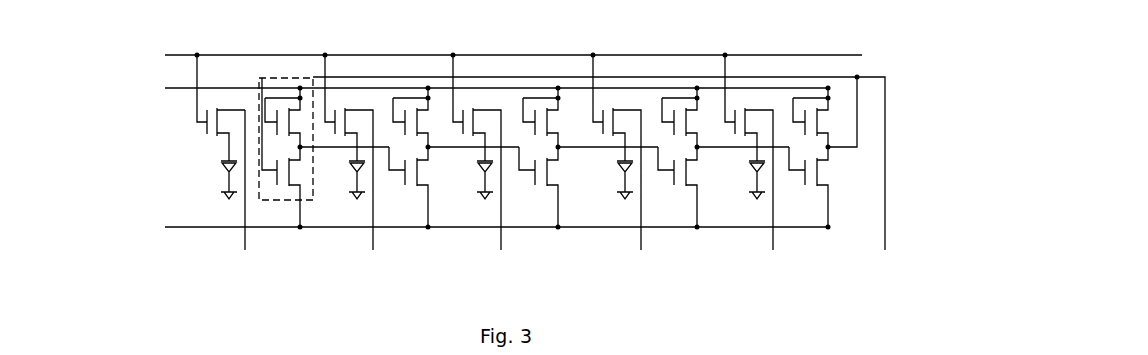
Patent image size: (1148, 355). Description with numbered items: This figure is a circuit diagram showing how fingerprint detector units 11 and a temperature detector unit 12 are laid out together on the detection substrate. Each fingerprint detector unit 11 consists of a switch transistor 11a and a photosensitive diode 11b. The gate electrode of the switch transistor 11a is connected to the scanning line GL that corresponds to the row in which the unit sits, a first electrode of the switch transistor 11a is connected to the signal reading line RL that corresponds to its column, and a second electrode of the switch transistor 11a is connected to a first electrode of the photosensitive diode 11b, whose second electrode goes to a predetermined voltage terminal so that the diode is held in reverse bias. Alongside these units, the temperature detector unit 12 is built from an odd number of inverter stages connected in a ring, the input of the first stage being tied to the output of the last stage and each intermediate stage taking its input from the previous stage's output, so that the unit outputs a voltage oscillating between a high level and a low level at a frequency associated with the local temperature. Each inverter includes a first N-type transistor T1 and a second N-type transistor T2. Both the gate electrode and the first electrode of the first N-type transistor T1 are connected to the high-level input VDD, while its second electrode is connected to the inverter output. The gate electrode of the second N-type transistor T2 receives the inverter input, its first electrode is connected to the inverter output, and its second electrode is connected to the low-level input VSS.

The fingerprint detector unit 11 is at (137, 133).
The switch transistor 11a is at (210, 127).
The photosensitive diode 11b is at (222, 168).
The temperature detector unit 12 is at (324, 175).
The first N-type transistor T1 is at (288, 117).
The second N-type transistor T2 is at (294, 187).
The scanning line GL is at (493, 56).
The high-level input VDD is at (470, 89).
The low-level input VSS is at (477, 223).
The signal reading line RL is at (243, 239).